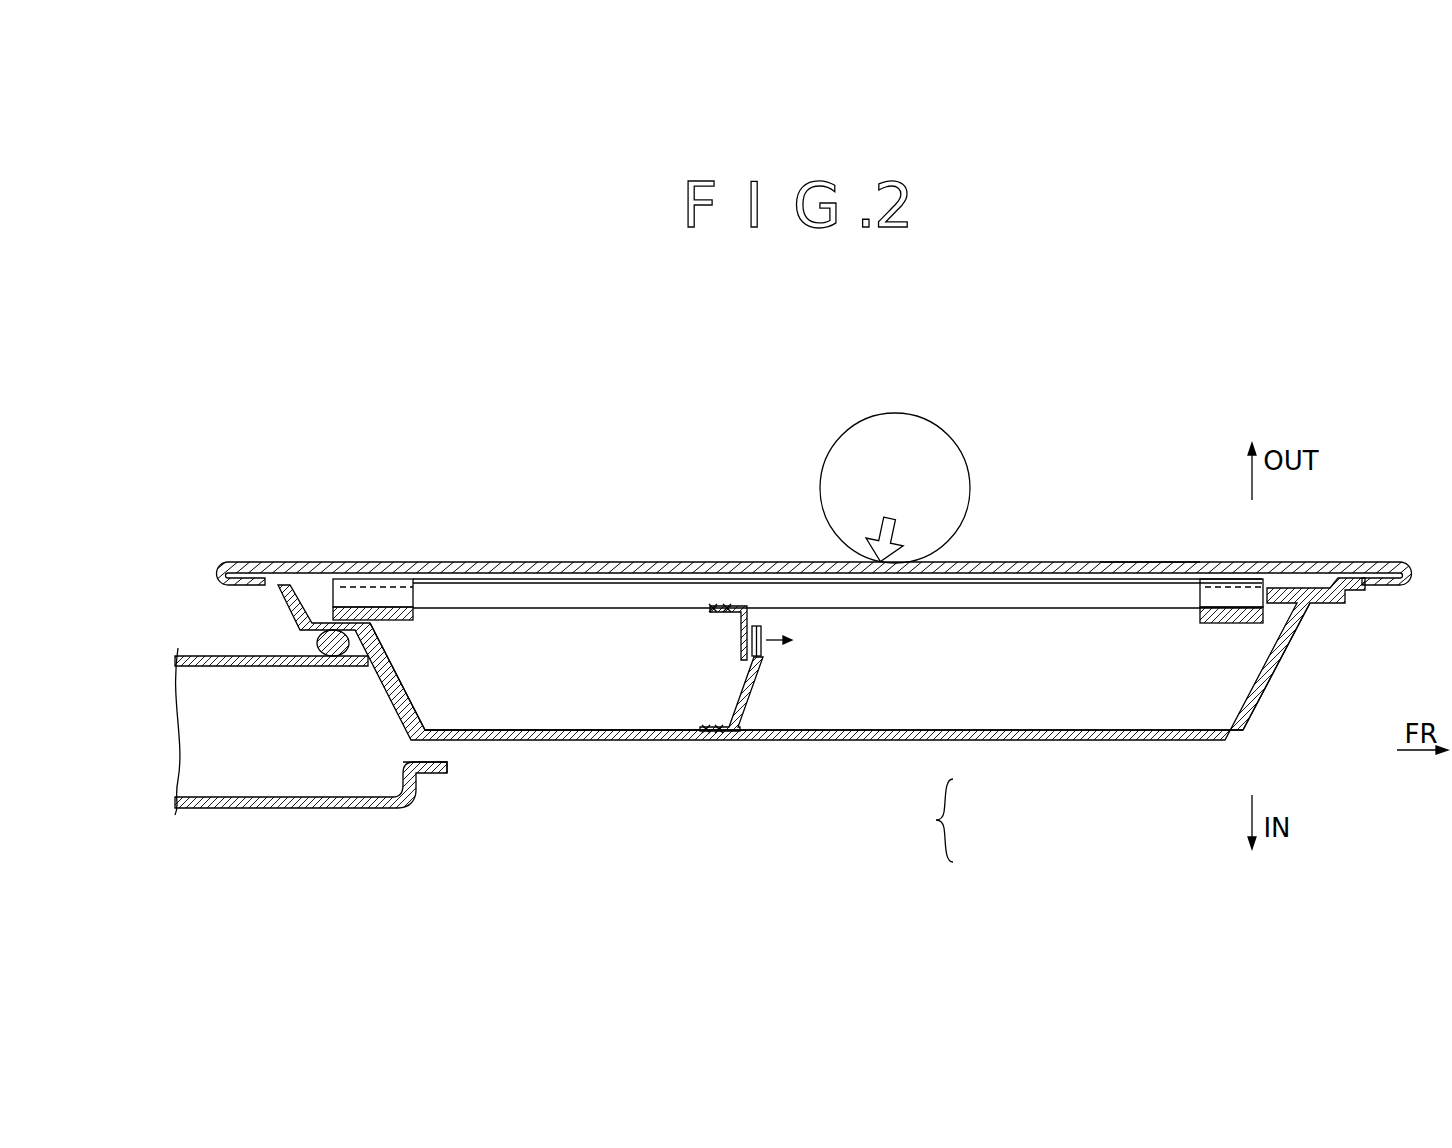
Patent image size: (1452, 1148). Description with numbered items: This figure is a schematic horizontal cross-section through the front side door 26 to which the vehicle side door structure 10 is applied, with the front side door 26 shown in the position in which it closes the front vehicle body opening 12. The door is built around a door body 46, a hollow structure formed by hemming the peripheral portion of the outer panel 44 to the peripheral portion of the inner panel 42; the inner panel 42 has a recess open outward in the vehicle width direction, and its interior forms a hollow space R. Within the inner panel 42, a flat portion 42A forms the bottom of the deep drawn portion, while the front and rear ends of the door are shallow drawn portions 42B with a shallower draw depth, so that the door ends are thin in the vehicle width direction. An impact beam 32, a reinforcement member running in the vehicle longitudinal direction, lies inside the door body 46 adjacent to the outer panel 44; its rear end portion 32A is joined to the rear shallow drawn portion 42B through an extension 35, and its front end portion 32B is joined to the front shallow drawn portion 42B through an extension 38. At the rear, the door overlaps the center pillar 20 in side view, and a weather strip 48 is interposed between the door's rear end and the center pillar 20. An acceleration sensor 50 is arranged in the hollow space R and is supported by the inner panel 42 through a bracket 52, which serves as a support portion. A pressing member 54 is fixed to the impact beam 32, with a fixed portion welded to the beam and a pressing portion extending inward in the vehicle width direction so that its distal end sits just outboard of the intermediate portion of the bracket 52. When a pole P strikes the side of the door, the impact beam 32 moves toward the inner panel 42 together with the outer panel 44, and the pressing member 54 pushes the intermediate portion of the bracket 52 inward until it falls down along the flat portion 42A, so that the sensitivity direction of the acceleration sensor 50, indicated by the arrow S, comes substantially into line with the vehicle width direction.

The vehicle side door structure 10 is at (678, 700).
The vehicle body opening 12 is at (447, 766).
The center pillar 20 is at (198, 650).
The front side door 26 is at (904, 840).
The impact beam 32 is at (983, 606).
The rear end portion 32A is at (370, 592).
The front end portion 32B is at (1223, 597).
The extension 35 is at (400, 612).
The extension 38 is at (1222, 625).
The inner panel 42 is at (1018, 739).
The flat portion 42A is at (874, 742).
The shallow drawn portion 42B is at (362, 664).
The outer panel 44 is at (1152, 556).
The door body 46 is at (919, 820).
The weather strip 48 is at (305, 647).
The acceleration sensor 50 is at (758, 625).
The bracket 52 is at (750, 690).
The pressing member 54 is at (739, 640).
The pole P is at (944, 444).
The signal S is at (794, 638).
The hollow space R is at (603, 689).